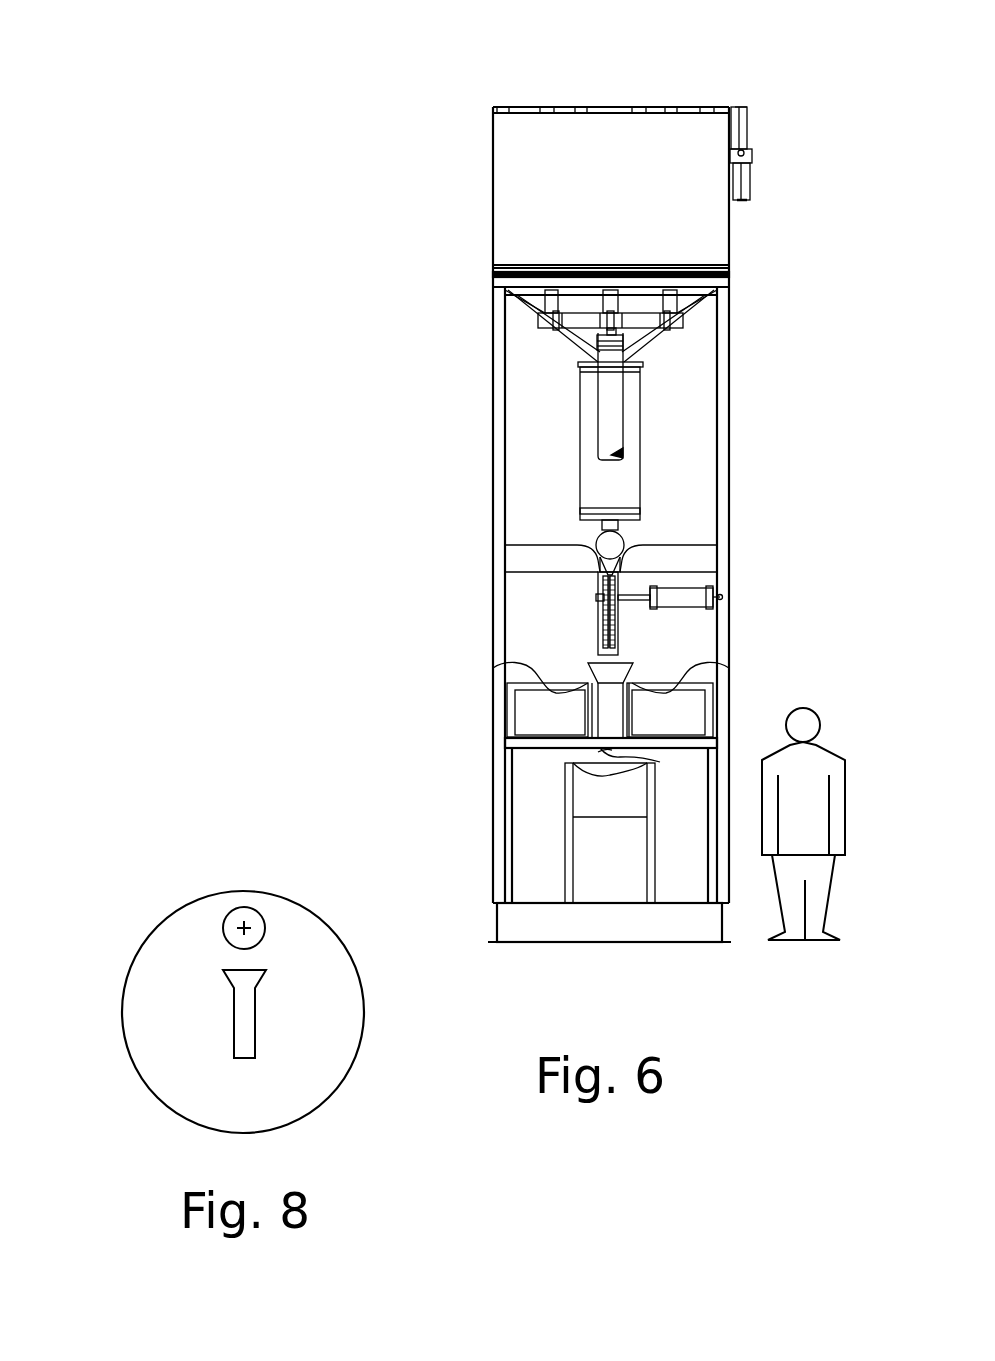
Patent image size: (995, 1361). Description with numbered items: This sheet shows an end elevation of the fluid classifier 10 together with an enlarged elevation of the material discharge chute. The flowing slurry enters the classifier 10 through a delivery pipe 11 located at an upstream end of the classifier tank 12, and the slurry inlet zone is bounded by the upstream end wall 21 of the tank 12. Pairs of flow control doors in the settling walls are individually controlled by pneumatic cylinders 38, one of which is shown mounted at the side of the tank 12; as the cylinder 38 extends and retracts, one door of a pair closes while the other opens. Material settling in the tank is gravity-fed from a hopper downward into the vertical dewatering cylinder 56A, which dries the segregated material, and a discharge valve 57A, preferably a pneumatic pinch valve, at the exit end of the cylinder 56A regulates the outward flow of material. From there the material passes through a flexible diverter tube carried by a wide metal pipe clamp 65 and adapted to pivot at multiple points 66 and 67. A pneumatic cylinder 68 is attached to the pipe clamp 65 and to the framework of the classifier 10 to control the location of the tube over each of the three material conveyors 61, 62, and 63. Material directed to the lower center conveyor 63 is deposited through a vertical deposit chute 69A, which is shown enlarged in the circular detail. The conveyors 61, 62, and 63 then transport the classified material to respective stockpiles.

In FIG. 6, the classifier 10 is at (352, 257).
In FIG. 6, the delivery pipe 11 is at (615, 430).
In FIG. 6, the classifier tank 12 is at (780, 113).
In FIG. 6, the upstream end wall 21 is at (624, 203).
In FIG. 6, the pneumatic cylinder 38 is at (747, 172).
In FIG. 6, the dewatering cylinder 56A is at (628, 478).
In FIG. 6, the discharge valve 57A is at (622, 545).
In FIG. 6, the material conveyor 61 is at (682, 690).
In FIG. 6, the material conveyor 62 is at (530, 690).
In FIG. 6, the lower center conveyor 63 is at (595, 758).
In FIG. 6, the pipe clamp 65 is at (623, 598).
In FIG. 6, the pivot point 66 is at (598, 566).
In FIG. 6, the pivot point 67 is at (598, 598).
In FIG. 6, the pneumatic cylinder 68 is at (695, 592).
In FIG. 6, the vertical deposit chute 69A is at (615, 758).
In FIG. 8, the vertical deposit chute 69A is at (240, 1020).